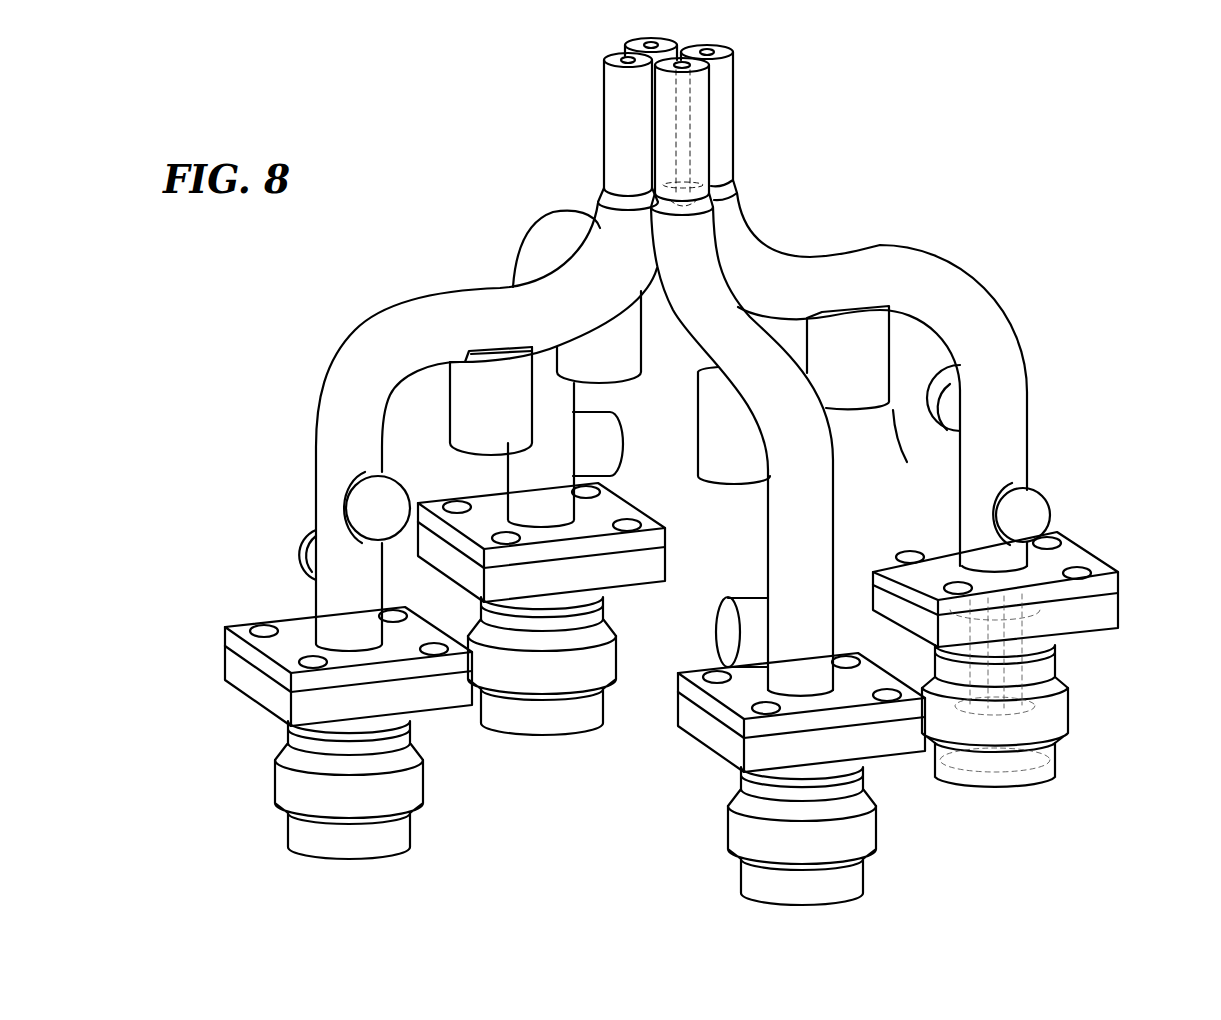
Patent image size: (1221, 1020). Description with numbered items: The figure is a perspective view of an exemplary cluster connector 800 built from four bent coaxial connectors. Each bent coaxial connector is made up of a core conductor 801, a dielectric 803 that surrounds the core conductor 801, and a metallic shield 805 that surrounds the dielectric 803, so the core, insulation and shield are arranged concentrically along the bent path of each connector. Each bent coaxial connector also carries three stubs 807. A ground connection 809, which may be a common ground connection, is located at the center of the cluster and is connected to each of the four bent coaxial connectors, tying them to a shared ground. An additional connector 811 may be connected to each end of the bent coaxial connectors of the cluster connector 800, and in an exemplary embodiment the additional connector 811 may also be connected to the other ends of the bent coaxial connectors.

The cluster connector 800 is at (1000, 182).
The core conductor 801 is at (686, 91).
The dielectric 803 is at (704, 122).
The metallic shield 805 is at (962, 262).
The stubs 807 is at (993, 492).
The ground connection 809 is at (679, 52).
The additional connector 811 is at (1073, 700).